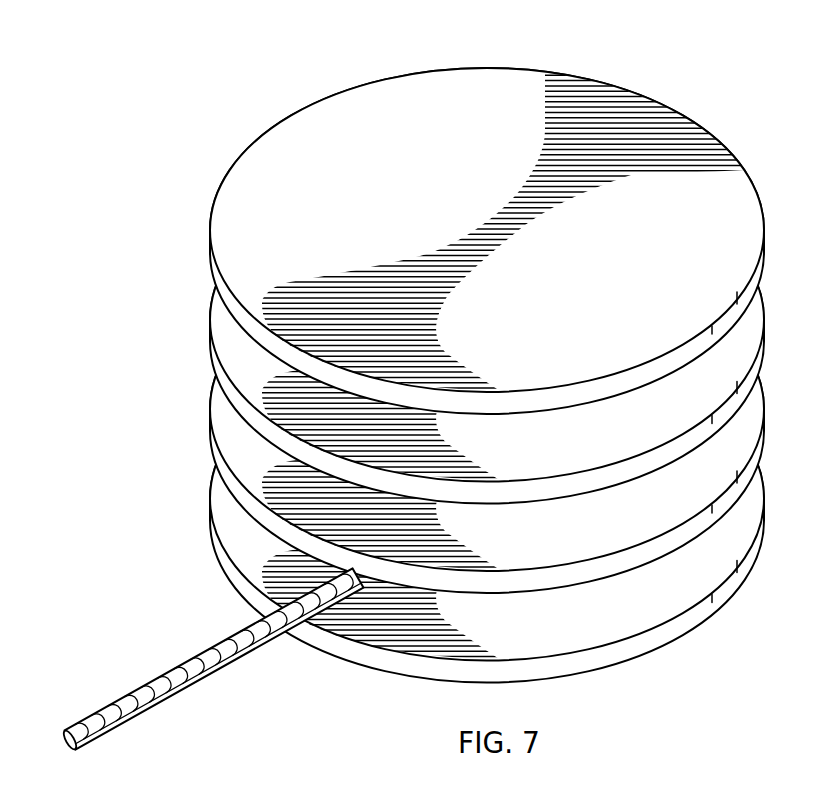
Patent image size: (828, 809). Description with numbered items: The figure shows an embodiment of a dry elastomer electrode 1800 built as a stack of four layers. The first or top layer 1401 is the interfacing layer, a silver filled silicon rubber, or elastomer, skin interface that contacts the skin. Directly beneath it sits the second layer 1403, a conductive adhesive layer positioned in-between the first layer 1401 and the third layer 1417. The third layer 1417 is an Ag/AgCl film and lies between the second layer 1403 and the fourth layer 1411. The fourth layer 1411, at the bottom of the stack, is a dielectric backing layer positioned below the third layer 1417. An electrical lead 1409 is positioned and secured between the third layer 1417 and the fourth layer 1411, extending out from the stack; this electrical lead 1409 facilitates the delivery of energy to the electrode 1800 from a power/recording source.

The electrode 1800 is at (452, 346).
The first layer 1401 is at (211, 257).
The second layer 1403 is at (211, 347).
The third layer 1417 is at (211, 437).
The fourth layer 1411 is at (213, 527).
The electrical lead 1409 is at (155, 676).